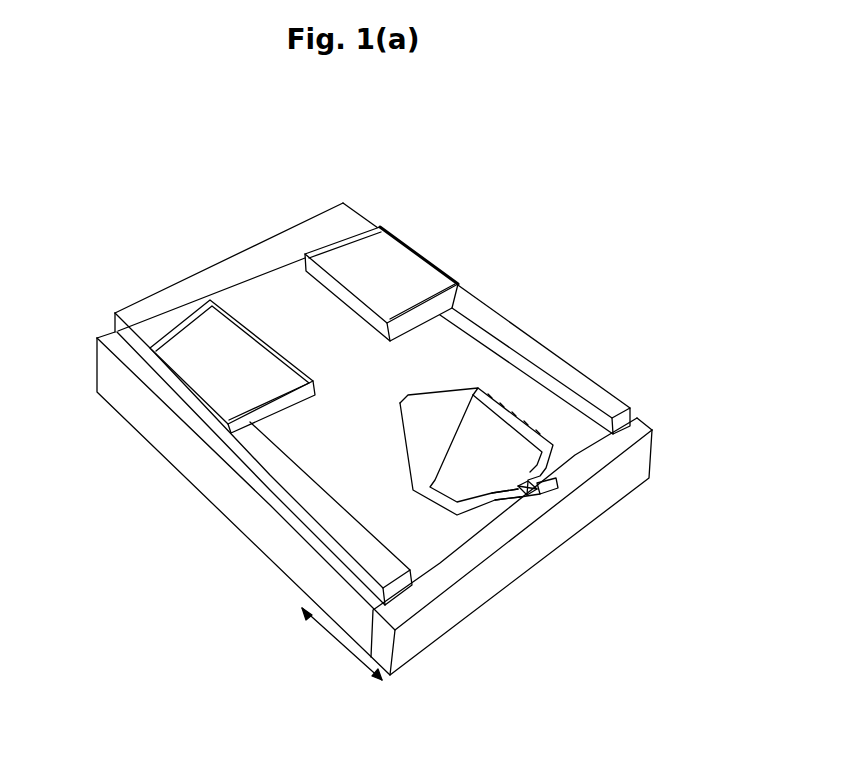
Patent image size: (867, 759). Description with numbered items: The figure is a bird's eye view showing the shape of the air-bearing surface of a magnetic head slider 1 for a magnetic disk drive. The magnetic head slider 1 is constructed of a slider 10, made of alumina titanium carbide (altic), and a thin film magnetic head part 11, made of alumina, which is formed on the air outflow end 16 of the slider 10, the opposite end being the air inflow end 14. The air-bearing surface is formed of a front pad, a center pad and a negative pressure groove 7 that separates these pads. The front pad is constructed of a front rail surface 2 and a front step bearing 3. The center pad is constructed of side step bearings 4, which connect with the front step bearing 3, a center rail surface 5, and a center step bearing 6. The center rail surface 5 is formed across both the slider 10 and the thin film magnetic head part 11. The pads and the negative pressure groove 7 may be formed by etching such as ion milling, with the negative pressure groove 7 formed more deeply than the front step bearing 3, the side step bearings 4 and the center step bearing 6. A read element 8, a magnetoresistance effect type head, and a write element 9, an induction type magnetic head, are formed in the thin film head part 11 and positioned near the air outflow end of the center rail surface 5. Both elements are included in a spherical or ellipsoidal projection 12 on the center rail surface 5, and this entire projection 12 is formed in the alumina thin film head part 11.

The magnetic head slider 1 is at (220, 247).
The front rail surface 2 is at (385, 275).
The front step bearing 3 is at (347, 222).
The side step bearings 4 is at (537, 350).
The center rail surface 5 is at (503, 432).
The center step bearing 6 is at (435, 430).
The negative pressure groove 7 is at (375, 397).
The read element 8 is at (556, 478).
The write element 9 is at (540, 493).
The slider 10 is at (253, 520).
The thin film magnetic head part 11 is at (378, 658).
The spherical or ellipsoidal projection 12 is at (527, 503).
The air inflow end 14 is at (177, 273).
The air outflow end 16 is at (475, 613).